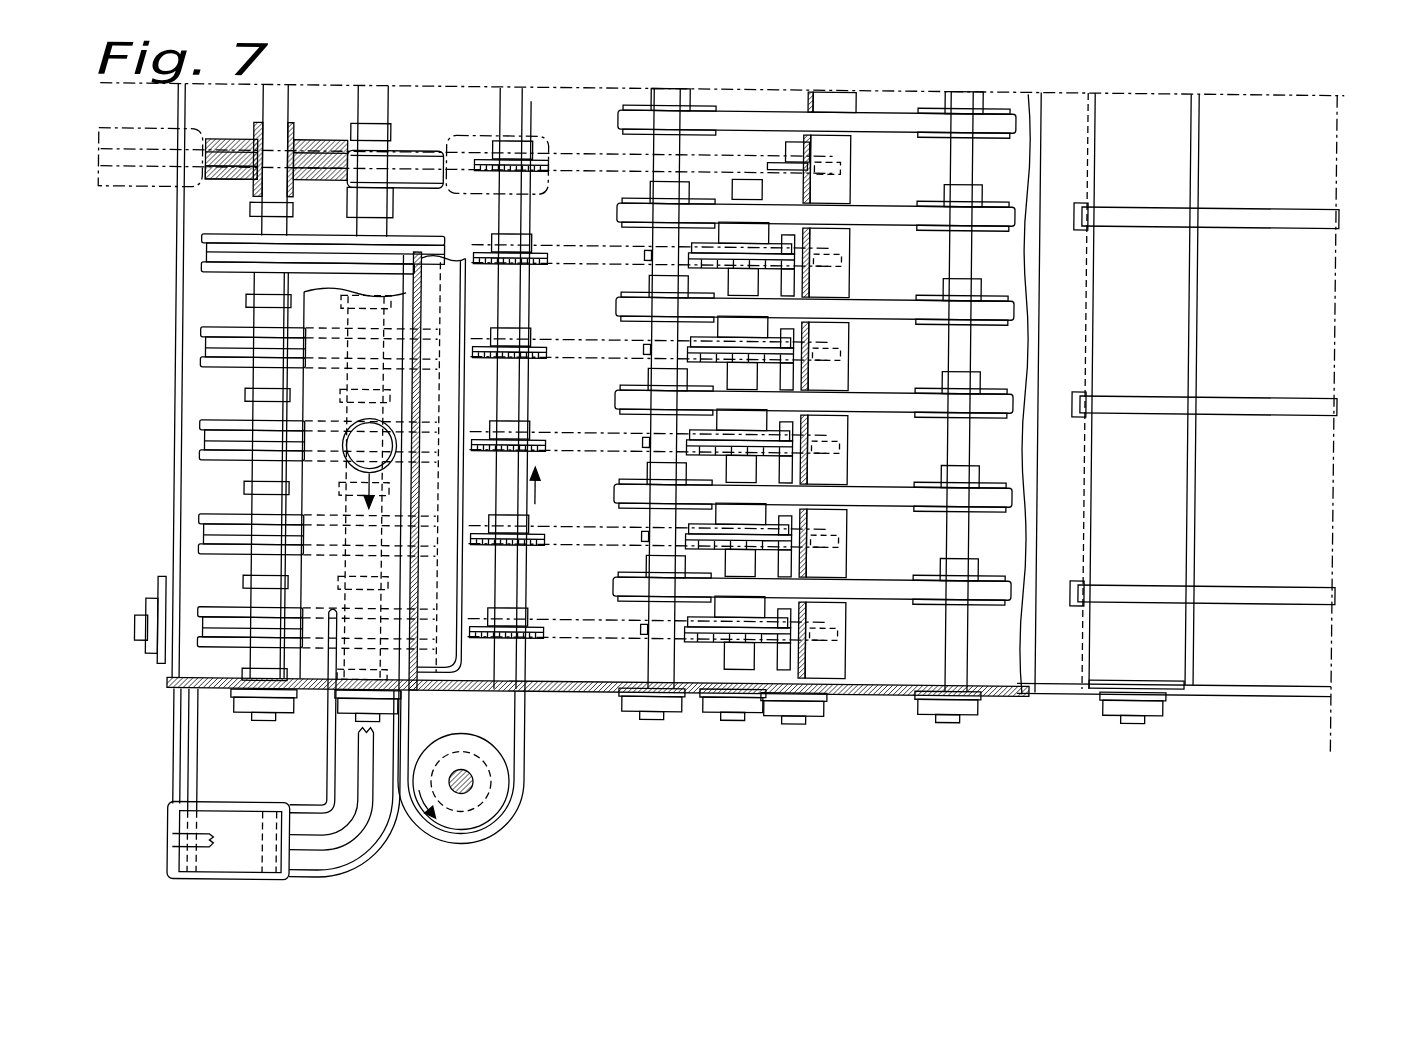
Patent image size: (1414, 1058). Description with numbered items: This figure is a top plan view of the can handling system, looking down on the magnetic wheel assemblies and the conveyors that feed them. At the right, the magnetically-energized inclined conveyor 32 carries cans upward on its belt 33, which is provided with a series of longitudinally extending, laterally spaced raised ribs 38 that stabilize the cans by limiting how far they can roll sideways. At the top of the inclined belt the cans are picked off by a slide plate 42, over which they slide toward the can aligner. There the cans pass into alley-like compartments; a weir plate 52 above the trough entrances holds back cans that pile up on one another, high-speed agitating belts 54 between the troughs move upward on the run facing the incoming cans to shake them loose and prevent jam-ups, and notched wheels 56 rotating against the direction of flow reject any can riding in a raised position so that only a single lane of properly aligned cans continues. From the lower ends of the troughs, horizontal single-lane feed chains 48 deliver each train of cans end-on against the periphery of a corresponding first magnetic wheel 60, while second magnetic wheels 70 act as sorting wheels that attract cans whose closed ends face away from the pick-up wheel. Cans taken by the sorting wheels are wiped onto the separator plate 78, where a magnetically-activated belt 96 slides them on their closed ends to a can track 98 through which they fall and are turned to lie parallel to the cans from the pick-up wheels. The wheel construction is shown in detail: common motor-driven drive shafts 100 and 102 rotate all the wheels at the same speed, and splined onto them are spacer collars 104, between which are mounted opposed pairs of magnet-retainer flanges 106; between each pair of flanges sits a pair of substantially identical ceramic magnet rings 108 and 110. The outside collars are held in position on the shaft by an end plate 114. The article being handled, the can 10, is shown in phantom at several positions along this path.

The article 10 is at (148, 124).
The inclined conveyor 32 is at (1258, 680).
The belt 33 is at (1310, 497).
The raised ribs 38 is at (1262, 213).
The slide plate 42 is at (1038, 349).
The single-lane feed chains 48 is at (575, 155).
The weir plate 52 is at (835, 194).
The agitating belts 54 is at (895, 252).
The notched wheels 56 is at (705, 262).
The first magnetic wheels 60 is at (415, 140).
The second magnetic wheels 70 is at (222, 366).
The separator plate 78 is at (312, 320).
The magnetically-activated belt 96 is at (522, 756).
The can track 98 is at (330, 878).
The drive shaft 100 is at (380, 88).
The drive shaft 102 is at (265, 718).
The spacer collars 104 is at (248, 210).
The magnet-retainer flanges 106 is at (330, 118).
The ceramic magnet ring 108 is at (242, 140).
The ceramic magnet ring 110 is at (210, 160).
The end plate 114 is at (854, 700).